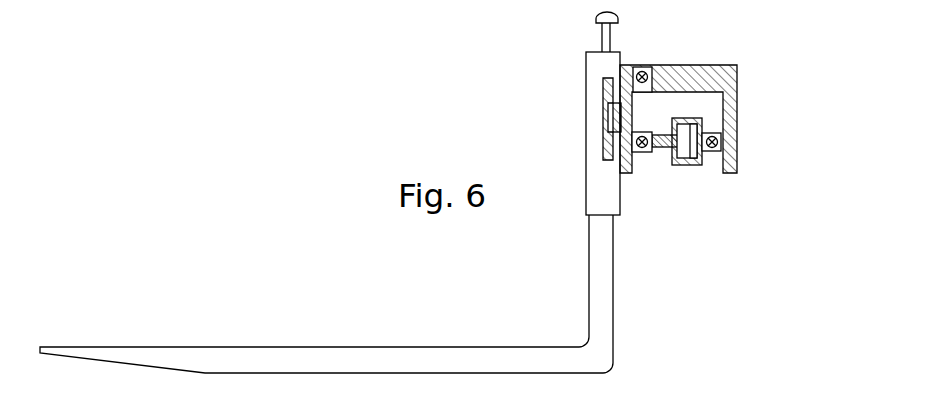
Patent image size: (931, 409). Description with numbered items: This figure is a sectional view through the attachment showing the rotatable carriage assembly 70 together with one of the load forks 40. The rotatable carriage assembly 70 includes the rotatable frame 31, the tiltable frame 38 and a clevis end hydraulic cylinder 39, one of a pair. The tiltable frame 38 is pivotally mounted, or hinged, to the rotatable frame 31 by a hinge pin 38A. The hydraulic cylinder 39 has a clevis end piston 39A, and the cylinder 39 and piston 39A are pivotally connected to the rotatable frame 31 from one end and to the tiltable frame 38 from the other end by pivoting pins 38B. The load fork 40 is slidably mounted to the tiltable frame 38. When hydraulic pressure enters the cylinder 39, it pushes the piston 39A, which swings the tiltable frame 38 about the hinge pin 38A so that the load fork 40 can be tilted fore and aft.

The rotatable frame 31 is at (688, 75).
The tiltable frame 38 is at (612, 108).
The hinge pin 38A is at (646, 71).
The pivoting pins 38B is at (716, 139).
The clevis end hydraulic cylinder 39 is at (690, 161).
The clevis end piston 39A is at (667, 150).
The load fork 40 is at (488, 362).
The rotatable carriage assembly 70 is at (705, 135).